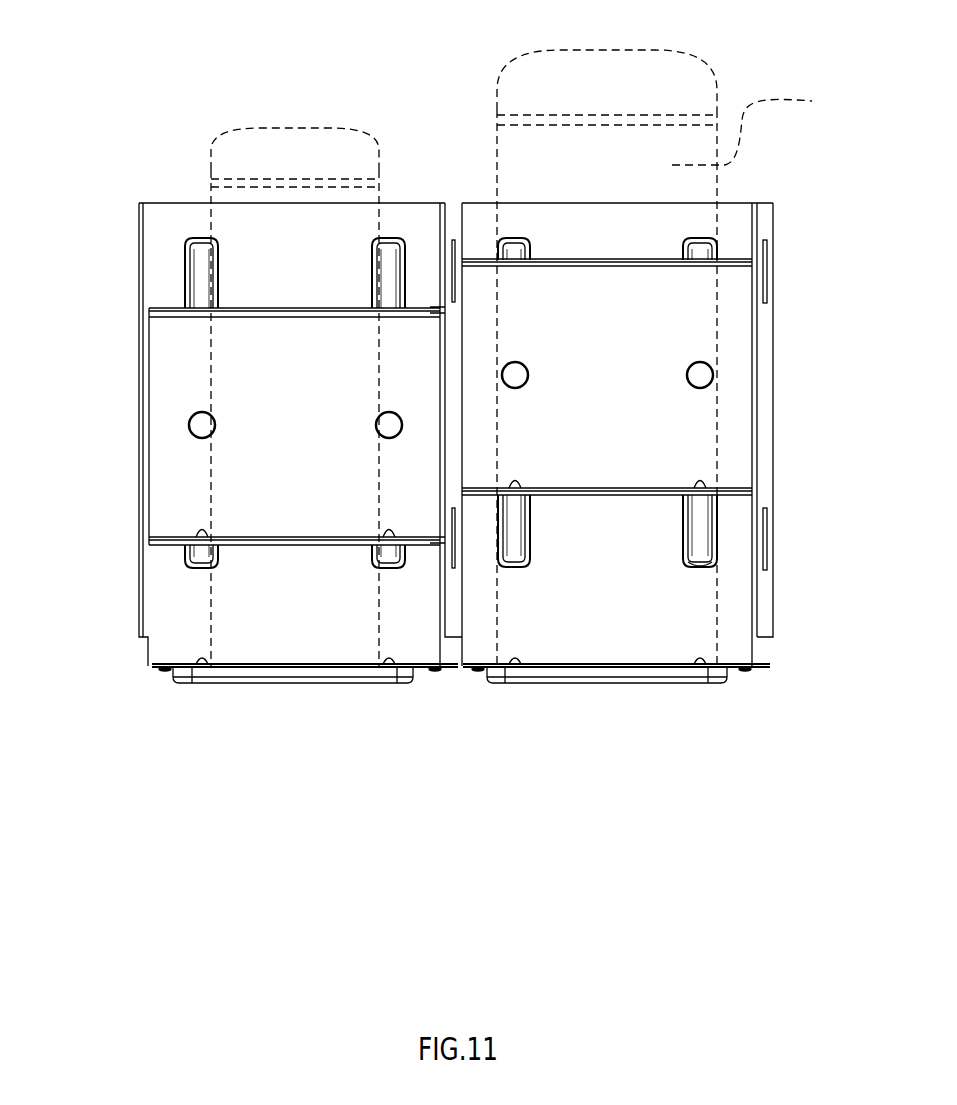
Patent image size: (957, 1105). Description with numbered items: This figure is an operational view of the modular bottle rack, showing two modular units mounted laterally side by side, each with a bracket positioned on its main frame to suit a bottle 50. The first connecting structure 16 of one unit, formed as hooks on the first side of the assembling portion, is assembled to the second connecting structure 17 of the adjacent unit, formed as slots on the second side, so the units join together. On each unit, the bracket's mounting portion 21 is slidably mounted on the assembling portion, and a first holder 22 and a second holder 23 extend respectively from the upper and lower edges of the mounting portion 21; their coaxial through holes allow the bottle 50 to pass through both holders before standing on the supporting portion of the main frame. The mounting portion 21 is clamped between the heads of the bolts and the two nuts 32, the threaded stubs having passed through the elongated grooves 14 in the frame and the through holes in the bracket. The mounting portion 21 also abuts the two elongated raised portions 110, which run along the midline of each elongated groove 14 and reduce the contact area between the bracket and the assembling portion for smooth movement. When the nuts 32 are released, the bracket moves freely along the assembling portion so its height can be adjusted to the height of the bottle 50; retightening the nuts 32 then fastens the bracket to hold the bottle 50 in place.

The first connecting structure 16 is at (139, 318).
The second connecting structure 17 is at (457, 248).
The mounting portion 21 is at (736, 408).
The first holder 22 is at (643, 263).
The second holder 23 is at (662, 492).
The nut 32 is at (700, 375).
The elongated groove 14 is at (700, 523).
The elongated raised portion 110 is at (705, 568).
The bottle 50 is at (754, 126).